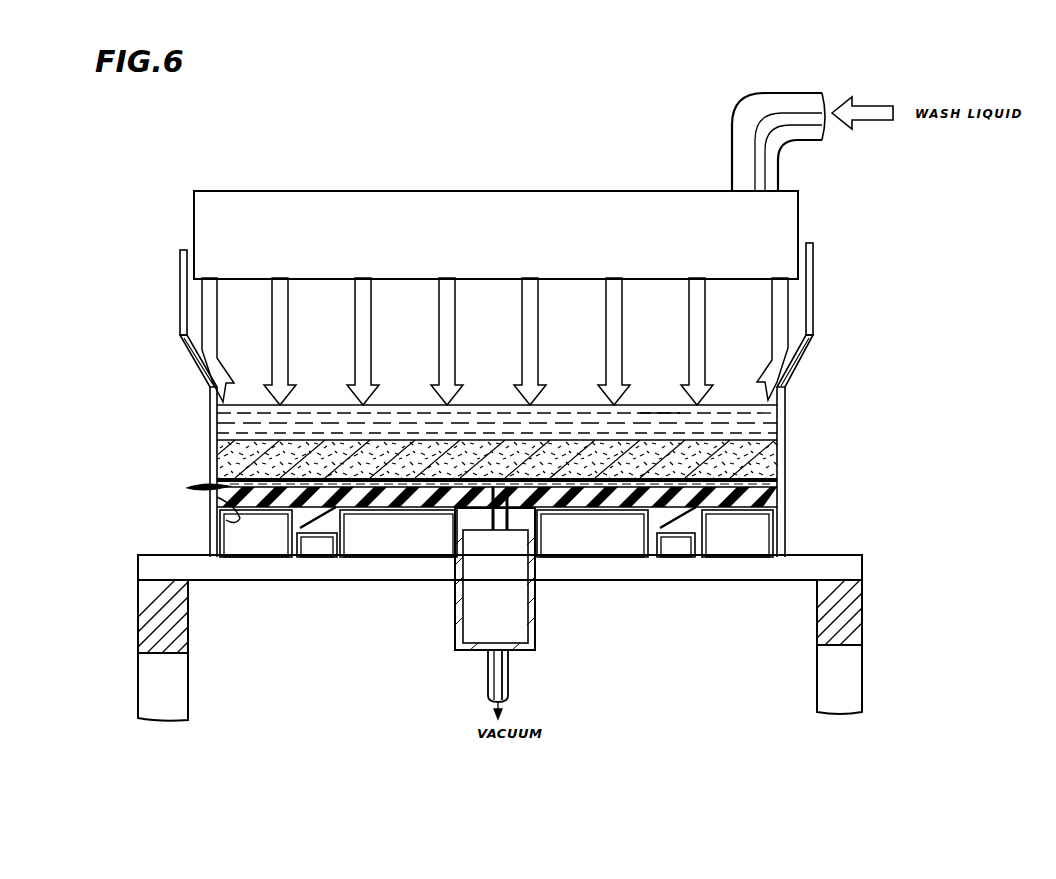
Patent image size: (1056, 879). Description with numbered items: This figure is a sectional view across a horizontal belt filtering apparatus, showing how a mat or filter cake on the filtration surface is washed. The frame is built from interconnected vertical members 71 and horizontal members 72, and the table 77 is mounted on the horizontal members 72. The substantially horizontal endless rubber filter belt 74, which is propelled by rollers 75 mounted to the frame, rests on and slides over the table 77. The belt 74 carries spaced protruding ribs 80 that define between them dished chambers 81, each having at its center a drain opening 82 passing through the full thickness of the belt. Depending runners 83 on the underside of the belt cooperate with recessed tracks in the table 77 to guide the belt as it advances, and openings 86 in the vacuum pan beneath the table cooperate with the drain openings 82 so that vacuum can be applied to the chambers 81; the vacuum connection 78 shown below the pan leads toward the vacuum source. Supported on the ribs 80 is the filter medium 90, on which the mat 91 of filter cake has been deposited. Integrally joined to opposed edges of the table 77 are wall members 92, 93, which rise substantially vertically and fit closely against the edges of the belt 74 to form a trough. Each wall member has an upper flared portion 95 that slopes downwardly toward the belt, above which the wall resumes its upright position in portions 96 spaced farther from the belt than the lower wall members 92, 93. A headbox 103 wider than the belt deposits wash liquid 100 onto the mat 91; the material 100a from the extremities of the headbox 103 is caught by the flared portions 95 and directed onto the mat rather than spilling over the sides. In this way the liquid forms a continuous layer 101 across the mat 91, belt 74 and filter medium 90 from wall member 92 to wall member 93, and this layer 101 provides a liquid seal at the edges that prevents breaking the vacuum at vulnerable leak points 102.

The headbox 103 is at (508, 210).
The upright wall portion 96 is at (180, 307).
The flared upper portion 95 is at (196, 363).
The wall member 92 is at (210, 445).
The table 77 is at (785, 528).
The wash liquid 100 is at (288, 350).
The material from headbox extremities 100a is at (217, 338).
The wall member 93 is at (786, 404).
The continuous liquid layer 101 is at (661, 414).
The mat 91 is at (404, 445).
The protruding ribs 80 is at (245, 477).
The filter medium 90 is at (750, 475).
The leak points 102 is at (199, 501).
The filter belt 74 is at (757, 488).
The dished chambers 81 is at (752, 512).
The drain opening 82 is at (455, 518).
The depending runners 83 is at (327, 517).
The rollers 75 is at (536, 625).
The vacuum pan openings 86 is at (500, 538).
The vacuum outlet tube 78 is at (509, 678).
The horizontal members 72 is at (311, 582).
The vertical members 71 is at (857, 672).